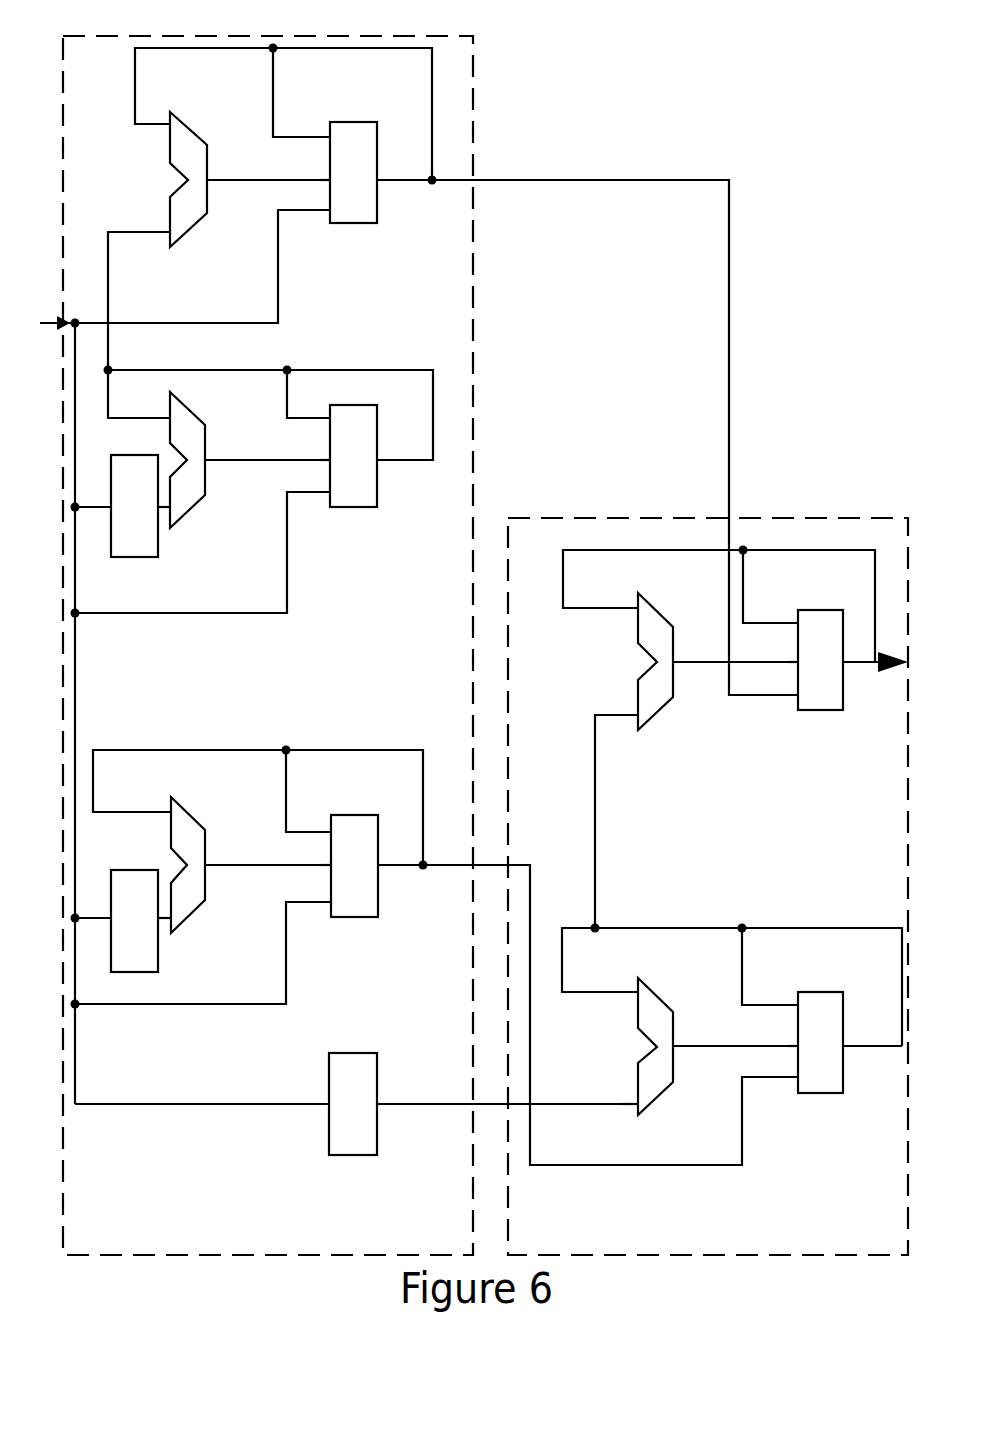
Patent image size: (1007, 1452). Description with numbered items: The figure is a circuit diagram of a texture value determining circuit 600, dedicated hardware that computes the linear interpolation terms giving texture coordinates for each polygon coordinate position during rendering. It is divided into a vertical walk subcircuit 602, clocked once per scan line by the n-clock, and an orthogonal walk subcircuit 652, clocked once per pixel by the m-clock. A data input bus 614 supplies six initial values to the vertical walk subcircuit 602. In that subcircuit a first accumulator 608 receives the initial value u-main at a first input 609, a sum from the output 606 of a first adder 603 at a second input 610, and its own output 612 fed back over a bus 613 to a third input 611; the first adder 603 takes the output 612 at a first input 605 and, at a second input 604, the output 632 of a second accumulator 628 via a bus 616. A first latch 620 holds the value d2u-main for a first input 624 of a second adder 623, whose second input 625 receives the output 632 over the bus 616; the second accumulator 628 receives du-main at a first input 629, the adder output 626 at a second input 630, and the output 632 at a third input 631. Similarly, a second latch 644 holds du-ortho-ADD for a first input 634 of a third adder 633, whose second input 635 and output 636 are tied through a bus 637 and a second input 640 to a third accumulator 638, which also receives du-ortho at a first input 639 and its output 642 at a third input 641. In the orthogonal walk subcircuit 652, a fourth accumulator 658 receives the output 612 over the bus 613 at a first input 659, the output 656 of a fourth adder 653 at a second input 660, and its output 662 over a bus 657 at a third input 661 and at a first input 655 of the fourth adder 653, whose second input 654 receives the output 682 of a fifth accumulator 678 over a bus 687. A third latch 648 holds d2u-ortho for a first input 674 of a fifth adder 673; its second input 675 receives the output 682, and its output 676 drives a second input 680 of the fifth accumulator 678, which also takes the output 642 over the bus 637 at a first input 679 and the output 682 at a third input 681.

The texture value determining circuit 600 is at (668, 33).
The vertical walk subcircuit 602 is at (147, 35).
The first adder 603 is at (170, 207).
The second input of the first adder 604 is at (170, 234).
The first input of the first adder 605 is at (170, 116).
The output of the first adder 606 is at (227, 166).
The first accumulator 608 is at (353, 172).
The first input of the first accumulator 609 is at (324, 212).
The second input of the first accumulator 610 is at (330, 181).
The third input of the first accumulator 611 is at (318, 136).
The output of the first accumulator 612 is at (378, 179).
The bus 613 is at (430, 97).
The data input bus 614 is at (62, 323).
The bus 616 is at (108, 352).
The first latch 620 is at (116, 506).
The second adder 623 is at (170, 466).
The first input of the second adder 624 is at (172, 514).
The second input of the second adder 625 is at (168, 418).
The output of the second adder 626 is at (207, 459).
The second accumulator 628 is at (353, 456).
The first input of the second accumulator 629 is at (330, 493).
The second input of the second accumulator 630 is at (330, 460).
The third input of the second accumulator 631 is at (330, 418).
The output of the second accumulator 632 is at (378, 458).
The third adder 633 is at (171, 872).
The first input of the third adder 634 is at (171, 923).
The second input of the third adder 635 is at (170, 812).
The output of the third adder 636 is at (228, 853).
The bus 637 is at (423, 812).
The third accumulator 638 is at (354, 866).
The first input of the third accumulator 639 is at (331, 903).
The second input of the third accumulator 640 is at (331, 869).
The third input of the third accumulator 641 is at (331, 829).
The output of the third accumulator 642 is at (397, 851).
The second latch 644 is at (116, 921).
The third latch 648 is at (356, 1104).
The orthogonal walk subcircuit 652 is at (591, 517).
The fourth adder 653 is at (648, 672).
The second input of the fourth adder 654 is at (637, 716).
The first input of the fourth adder 655 is at (637, 608).
The output of the fourth adder 656 is at (695, 651).
The bus 657 is at (860, 549).
The fourth accumulator 658 is at (820, 660).
The first input of the fourth accumulator 659 is at (797, 695).
The second input of the fourth accumulator 660 is at (797, 663).
The third input of the fourth accumulator 661 is at (797, 623).
The output of the fourth accumulator 662 is at (847, 661).
The fifth adder 673 is at (648, 1056).
The first input of the fifth adder 674 is at (637, 1106).
The second input of the fifth adder 675 is at (637, 991).
The output of the fifth adder 676 is at (675, 1046).
The fifth accumulator 678 is at (820, 1042).
The first input of the fifth accumulator 679 is at (798, 1080).
The second input of the fifth accumulator 680 is at (798, 1047).
The third input of the fifth accumulator 681 is at (797, 1005).
The output of the fifth accumulator 682 is at (843, 1048).
The bus 687 is at (902, 975).